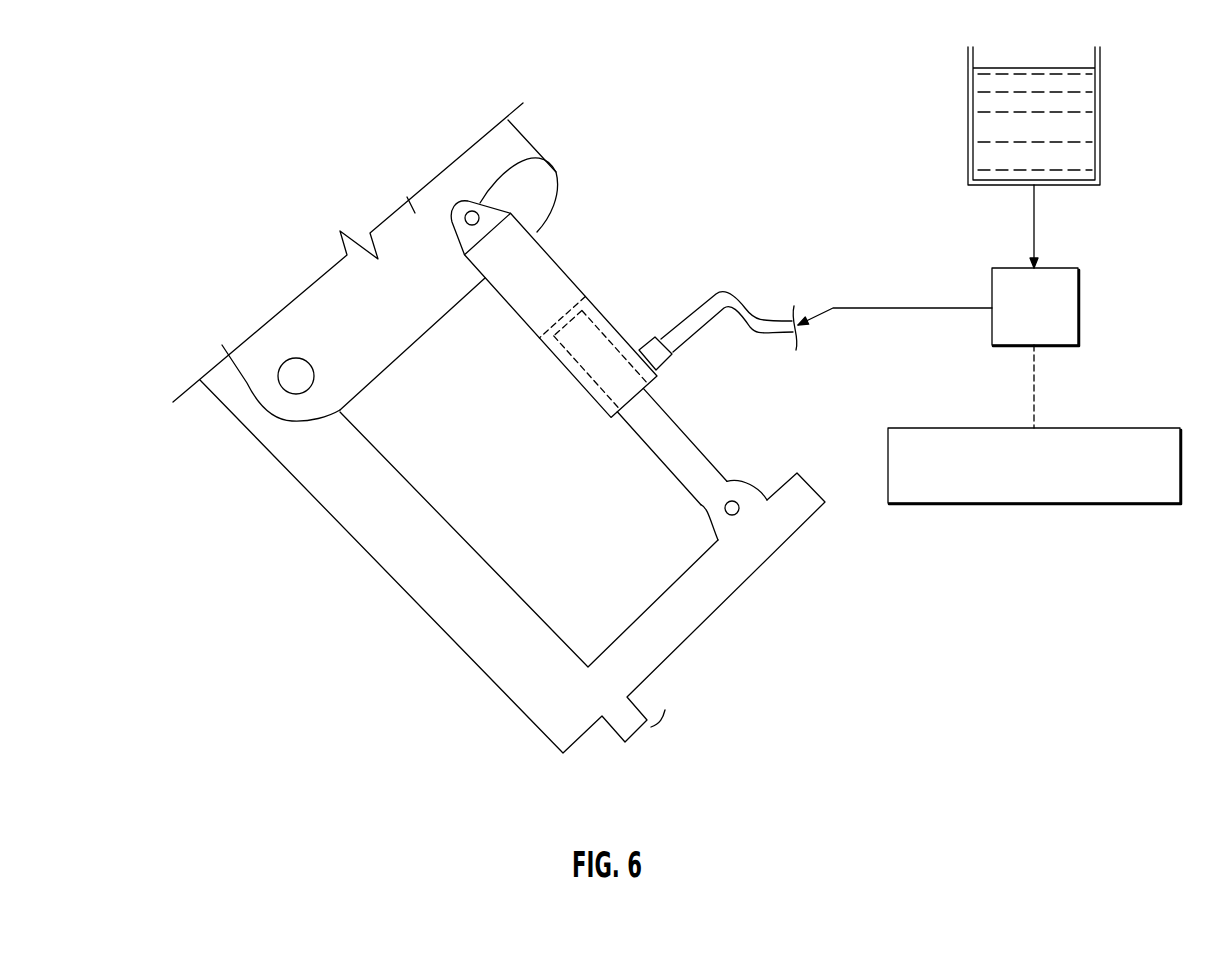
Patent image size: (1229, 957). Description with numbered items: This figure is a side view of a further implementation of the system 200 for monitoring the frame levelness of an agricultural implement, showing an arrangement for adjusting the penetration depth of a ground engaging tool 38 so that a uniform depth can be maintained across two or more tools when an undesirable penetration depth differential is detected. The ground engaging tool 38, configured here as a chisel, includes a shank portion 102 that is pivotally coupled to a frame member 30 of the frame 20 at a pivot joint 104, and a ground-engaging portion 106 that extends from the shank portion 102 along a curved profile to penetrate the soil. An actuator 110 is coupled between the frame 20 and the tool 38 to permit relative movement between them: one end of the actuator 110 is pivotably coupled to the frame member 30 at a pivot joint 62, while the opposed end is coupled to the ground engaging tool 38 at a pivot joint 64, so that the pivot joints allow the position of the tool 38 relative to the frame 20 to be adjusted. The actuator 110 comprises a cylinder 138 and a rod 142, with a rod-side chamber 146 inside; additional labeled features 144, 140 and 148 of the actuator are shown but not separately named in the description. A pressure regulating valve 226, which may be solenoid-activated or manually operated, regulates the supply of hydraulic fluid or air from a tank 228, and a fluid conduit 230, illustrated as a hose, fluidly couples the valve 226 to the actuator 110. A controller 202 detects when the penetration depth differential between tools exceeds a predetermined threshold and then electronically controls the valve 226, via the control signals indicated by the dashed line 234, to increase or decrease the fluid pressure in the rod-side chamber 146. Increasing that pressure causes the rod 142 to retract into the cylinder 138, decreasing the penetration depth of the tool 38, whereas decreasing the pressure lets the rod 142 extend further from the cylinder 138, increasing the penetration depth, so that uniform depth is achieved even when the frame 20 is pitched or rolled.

The system 200 is at (191, 125).
The frame 20 is at (313, 234).
The frame member 30 is at (407, 205).
The pivot joint 62 is at (538, 152).
The actuator 110 is at (598, 377).
The cylinder housing 144 is at (542, 279).
The cylinder 138 is at (495, 297).
The piston 140 is at (537, 333).
The rod-side chamber 146 is at (587, 392).
The fluid port 148 is at (662, 368).
The rod 142 is at (674, 465).
The pivot joint 64 is at (742, 507).
The fluid conduit 230 is at (745, 300).
The tank 228 is at (968, 127).
The pressure regulating valve 226 is at (1079, 308).
The dashed line 234 is at (1037, 378).
The controller 202 is at (965, 428).
The ground engaging tool 38 is at (512, 582).
The shank portion 102 is at (438, 602).
The pivot joint 104 is at (291, 394).
The ground-engaging portion 106 is at (624, 740).